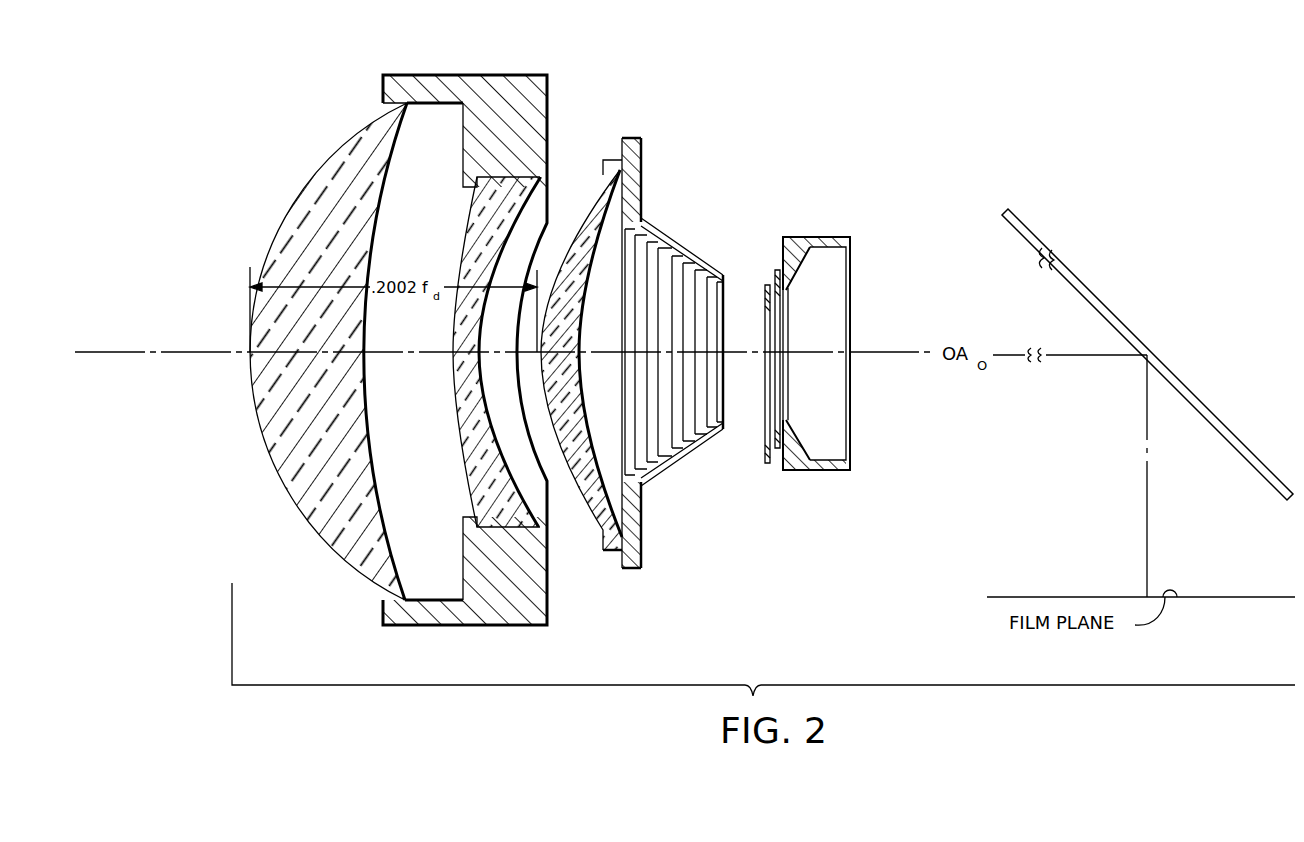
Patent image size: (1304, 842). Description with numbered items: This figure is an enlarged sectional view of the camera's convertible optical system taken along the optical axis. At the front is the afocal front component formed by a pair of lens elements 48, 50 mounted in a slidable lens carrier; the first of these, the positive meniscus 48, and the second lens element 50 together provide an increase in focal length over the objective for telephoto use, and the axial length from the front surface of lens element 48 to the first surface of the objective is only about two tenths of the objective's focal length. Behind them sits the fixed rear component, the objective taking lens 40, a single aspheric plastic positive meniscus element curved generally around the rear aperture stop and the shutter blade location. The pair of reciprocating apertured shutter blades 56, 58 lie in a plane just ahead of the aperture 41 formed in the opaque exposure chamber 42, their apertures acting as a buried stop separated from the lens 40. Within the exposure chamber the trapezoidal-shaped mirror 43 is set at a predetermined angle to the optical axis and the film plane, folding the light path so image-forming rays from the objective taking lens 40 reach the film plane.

The lens element 48 is at (363, 126).
The lens element 50 is at (466, 228).
The objective taking lens 40 is at (594, 190).
The shutter blade 56 is at (765, 287).
The shutter blade 58 is at (777, 284).
The exposure chamber 42 is at (816, 332).
The aperture 41 is at (789, 289).
The mirror 43 is at (1248, 452).